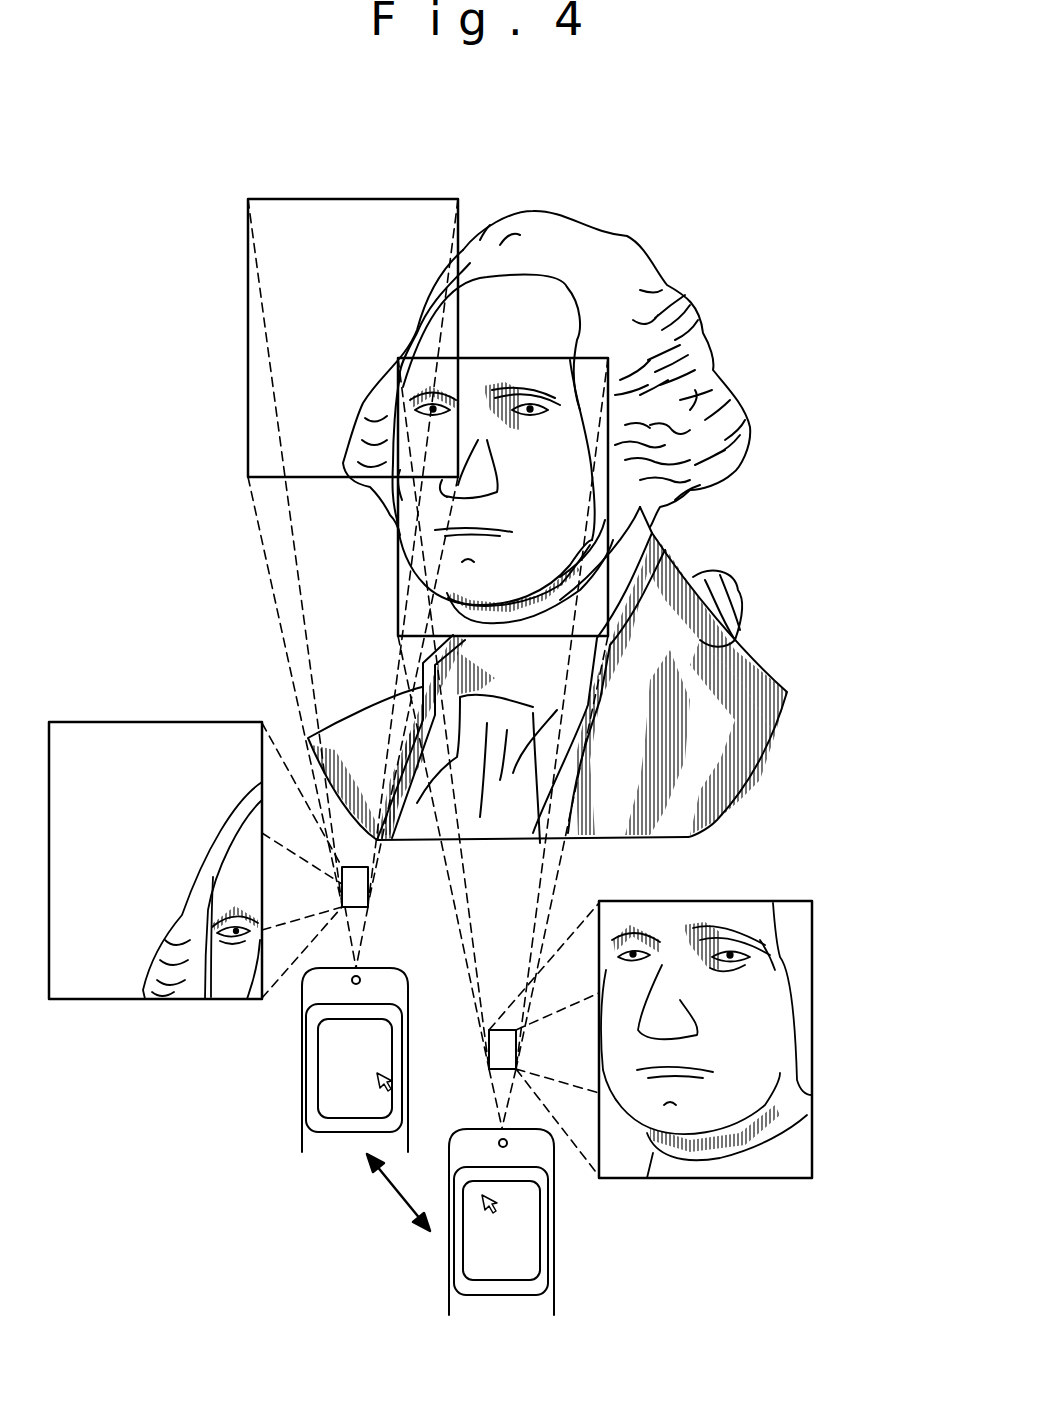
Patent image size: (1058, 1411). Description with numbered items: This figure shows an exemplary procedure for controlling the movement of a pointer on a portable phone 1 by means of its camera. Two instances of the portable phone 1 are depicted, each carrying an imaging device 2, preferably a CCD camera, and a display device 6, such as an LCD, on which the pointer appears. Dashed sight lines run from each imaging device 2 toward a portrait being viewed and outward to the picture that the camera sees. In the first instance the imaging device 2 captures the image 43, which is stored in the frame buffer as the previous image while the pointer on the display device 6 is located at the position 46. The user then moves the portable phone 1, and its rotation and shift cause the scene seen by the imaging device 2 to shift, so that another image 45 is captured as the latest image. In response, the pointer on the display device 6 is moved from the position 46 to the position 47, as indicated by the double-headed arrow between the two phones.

The portable phone 1 is at (300, 1129).
The imaging device 2 is at (366, 968).
The display device 6 is at (330, 1073).
The image 43 is at (95, 722).
The another image 45 is at (812, 1002).
The position 46 is at (386, 1078).
The position 47 is at (490, 1210).